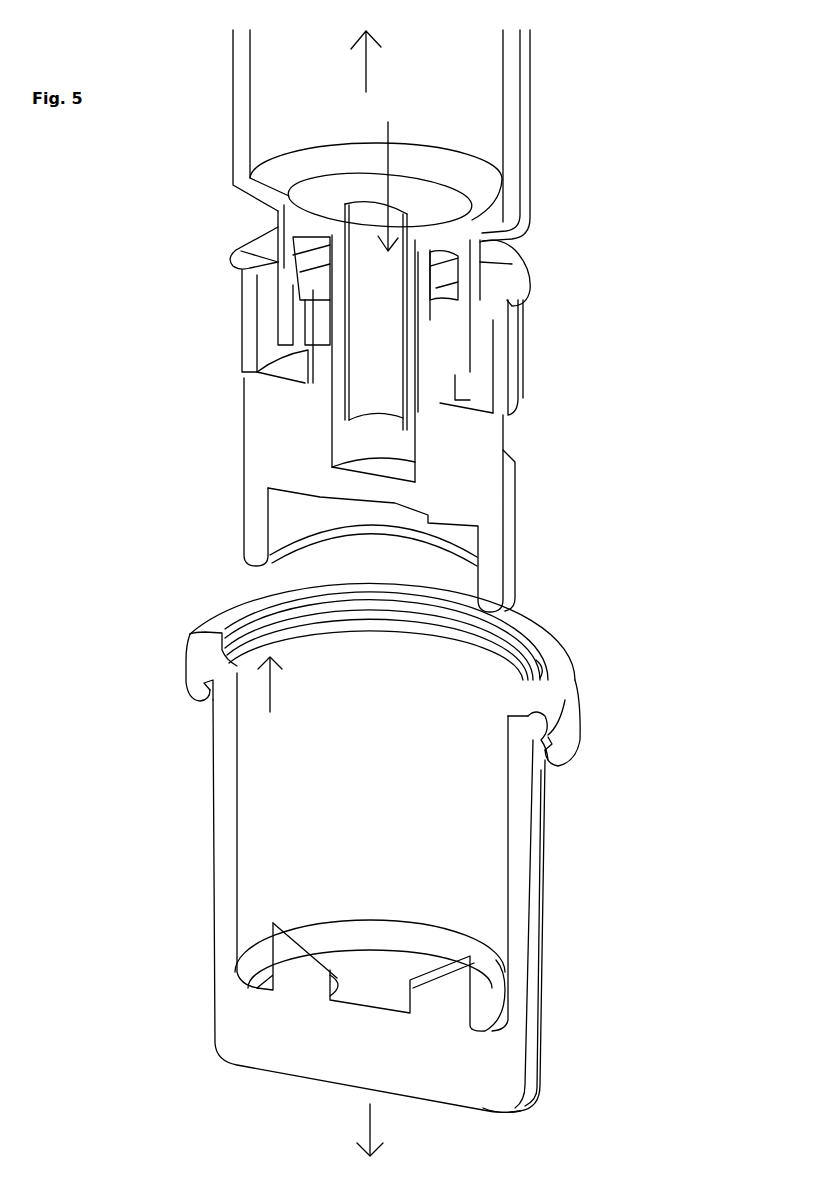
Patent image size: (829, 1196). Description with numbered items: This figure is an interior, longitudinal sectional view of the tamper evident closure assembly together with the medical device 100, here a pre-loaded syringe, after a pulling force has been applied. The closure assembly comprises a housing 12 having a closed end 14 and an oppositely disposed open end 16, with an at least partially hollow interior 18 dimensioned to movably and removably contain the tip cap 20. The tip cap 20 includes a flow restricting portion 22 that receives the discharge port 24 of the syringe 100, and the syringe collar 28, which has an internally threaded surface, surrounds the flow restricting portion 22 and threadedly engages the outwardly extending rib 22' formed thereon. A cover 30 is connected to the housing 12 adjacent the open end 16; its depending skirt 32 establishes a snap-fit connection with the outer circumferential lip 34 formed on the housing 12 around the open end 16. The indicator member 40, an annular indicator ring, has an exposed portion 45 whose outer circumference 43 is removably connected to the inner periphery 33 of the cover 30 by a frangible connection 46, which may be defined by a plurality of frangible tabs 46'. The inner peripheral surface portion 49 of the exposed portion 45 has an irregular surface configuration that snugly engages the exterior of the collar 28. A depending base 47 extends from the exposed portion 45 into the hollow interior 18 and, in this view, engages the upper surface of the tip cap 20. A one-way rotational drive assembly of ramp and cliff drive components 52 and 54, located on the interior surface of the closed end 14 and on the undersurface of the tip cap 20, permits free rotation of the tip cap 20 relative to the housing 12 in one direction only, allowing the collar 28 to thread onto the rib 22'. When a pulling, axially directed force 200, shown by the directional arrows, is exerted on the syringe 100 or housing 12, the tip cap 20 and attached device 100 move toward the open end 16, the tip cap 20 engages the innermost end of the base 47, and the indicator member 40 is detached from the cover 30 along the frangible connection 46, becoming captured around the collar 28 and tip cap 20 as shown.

The medical device 100 is at (540, 90).
The directional arrows 200 is at (371, 71).
The discharge port 24 is at (387, 177).
The indicator member 40 is at (204, 261).
The outer circumference 43 is at (245, 241).
The inner peripheral surface portion 49 is at (245, 268).
The rib 22' is at (252, 291).
The depending base 47 is at (248, 333).
The collar 28 is at (457, 246).
The exposed portion 45 is at (500, 263).
The flow restricting portion 22 is at (453, 342).
The tip cap 20 is at (224, 452).
The ramp and cliff drive component 54 is at (465, 527).
The open end 16 is at (482, 655).
The frangible tabs 46' is at (376, 658).
The cover 30 is at (190, 655).
The depending skirt 32 is at (197, 690).
The inner periphery 33 is at (538, 667).
The outer circumferential lip 34 is at (530, 733).
The frangible connection 46 is at (269, 696).
The hollow interior 18 is at (370, 904).
The housing 12 is at (543, 897).
The ramp and cliff drive component 52 is at (318, 957).
The closed end 14 is at (515, 1110).